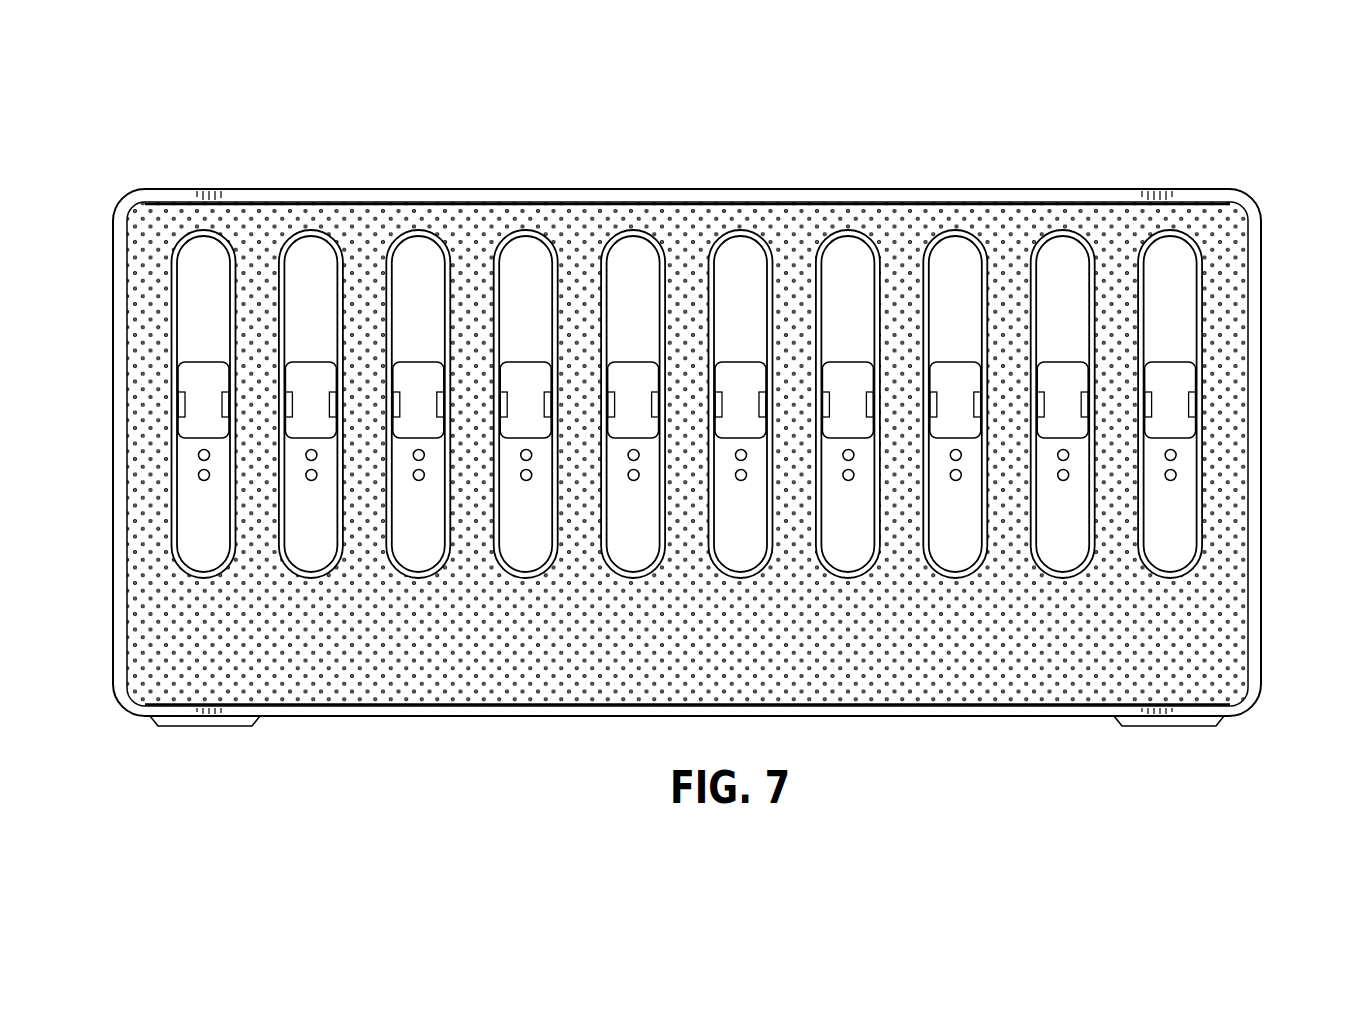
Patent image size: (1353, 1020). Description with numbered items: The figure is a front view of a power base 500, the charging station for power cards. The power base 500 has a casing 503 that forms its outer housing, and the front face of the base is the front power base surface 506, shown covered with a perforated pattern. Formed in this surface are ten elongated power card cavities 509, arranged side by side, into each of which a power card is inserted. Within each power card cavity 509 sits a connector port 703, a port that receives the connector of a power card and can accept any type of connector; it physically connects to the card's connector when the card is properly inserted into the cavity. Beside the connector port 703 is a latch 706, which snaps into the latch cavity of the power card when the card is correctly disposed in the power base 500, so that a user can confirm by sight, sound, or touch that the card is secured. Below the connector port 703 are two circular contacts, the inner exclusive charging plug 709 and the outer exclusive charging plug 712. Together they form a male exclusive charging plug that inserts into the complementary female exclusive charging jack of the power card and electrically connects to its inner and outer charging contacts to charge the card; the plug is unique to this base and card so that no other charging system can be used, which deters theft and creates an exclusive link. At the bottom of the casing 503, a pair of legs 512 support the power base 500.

The power base 500 is at (727, 447).
The casing 503 is at (1248, 212).
The front power base surface 506 is at (1200, 613).
The power card cavity 509 is at (1197, 290).
The connector port 703 is at (1175, 367).
The latch 706 is at (1147, 410).
The inner exclusive charging plug 709 is at (1176, 455).
The outer exclusive charging plug 712 is at (1177, 477).
The legs 512 is at (200, 726).